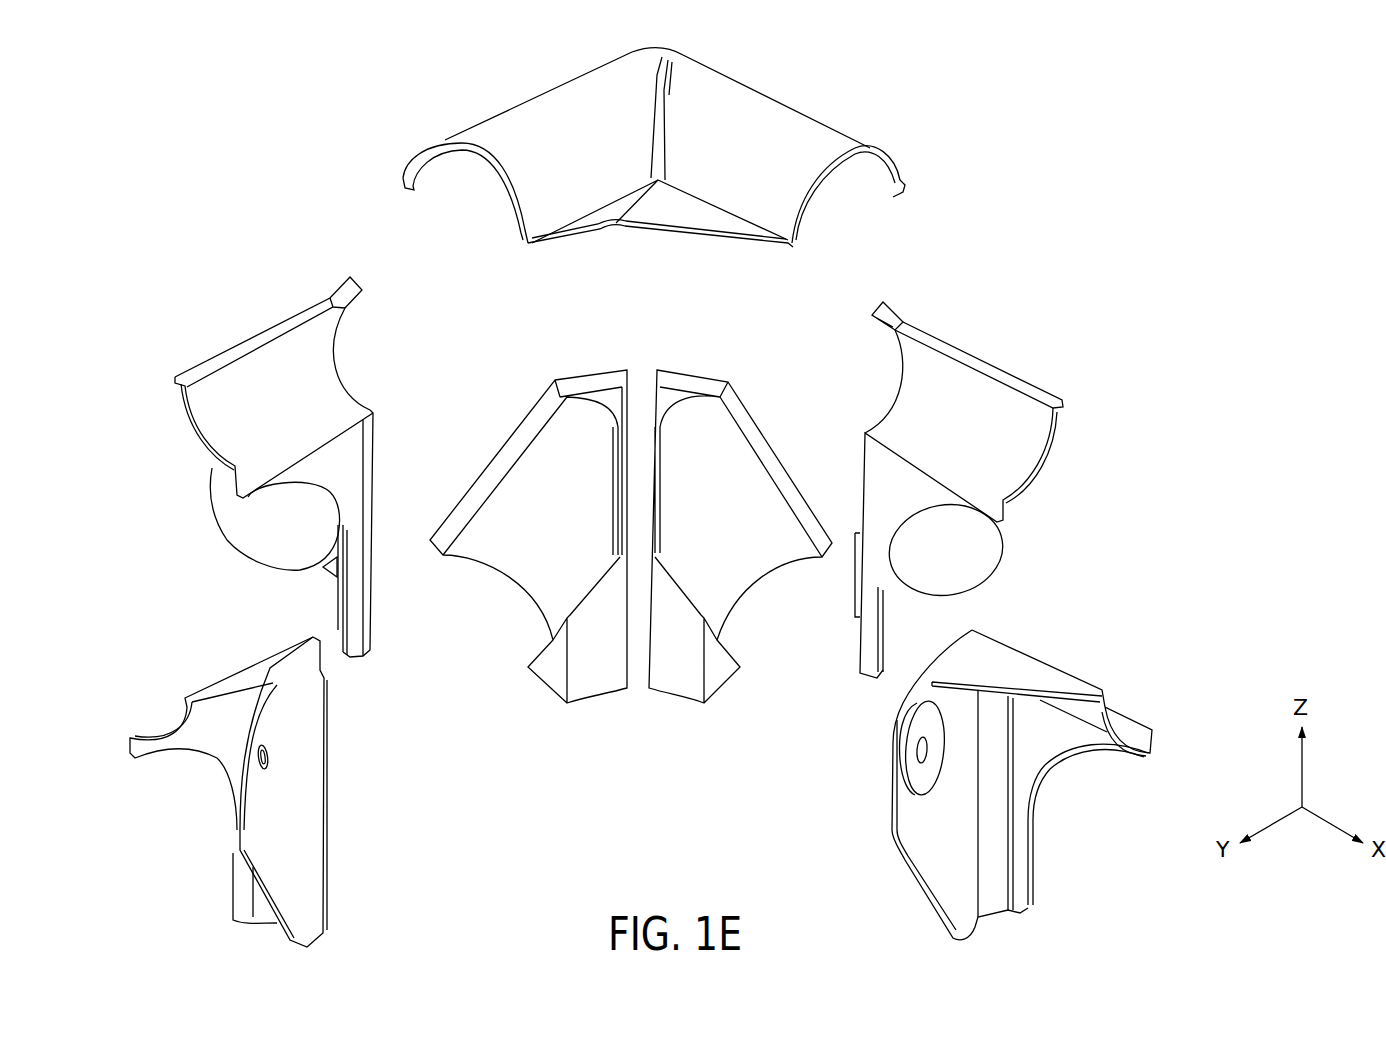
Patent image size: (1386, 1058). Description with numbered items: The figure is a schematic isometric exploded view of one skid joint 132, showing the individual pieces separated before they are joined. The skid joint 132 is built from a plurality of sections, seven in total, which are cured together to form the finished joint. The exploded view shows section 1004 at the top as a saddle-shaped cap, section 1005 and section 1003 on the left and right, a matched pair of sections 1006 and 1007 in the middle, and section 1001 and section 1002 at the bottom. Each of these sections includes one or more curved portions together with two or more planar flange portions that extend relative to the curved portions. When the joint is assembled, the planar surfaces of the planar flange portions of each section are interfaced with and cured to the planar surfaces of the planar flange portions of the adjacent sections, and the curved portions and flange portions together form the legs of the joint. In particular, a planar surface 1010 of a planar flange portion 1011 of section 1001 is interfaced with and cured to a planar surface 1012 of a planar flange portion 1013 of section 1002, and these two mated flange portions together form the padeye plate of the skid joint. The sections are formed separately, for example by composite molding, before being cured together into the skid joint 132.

The skid joint 132 is at (982, 127).
The section 1004 is at (778, 93).
The section 1005 is at (227, 342).
The section 1006 is at (565, 368).
The section 1007 is at (722, 368).
The section 1003 is at (1008, 367).
The section 1001 is at (227, 907).
The planar surface 1010 is at (297, 813).
The planar flange portion 1011 is at (243, 860).
The section 1002 is at (1050, 898).
The planar surface 1012 is at (893, 803).
The planar flange portion 1013 is at (952, 797).